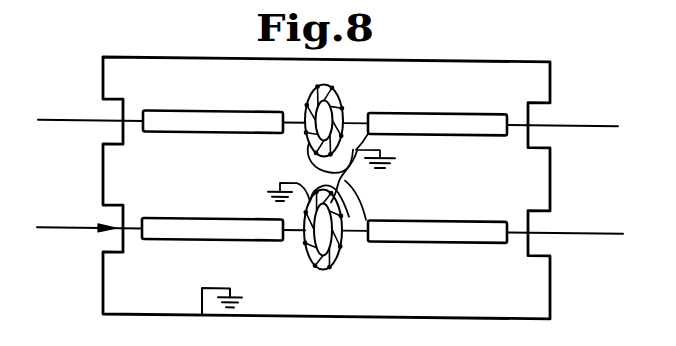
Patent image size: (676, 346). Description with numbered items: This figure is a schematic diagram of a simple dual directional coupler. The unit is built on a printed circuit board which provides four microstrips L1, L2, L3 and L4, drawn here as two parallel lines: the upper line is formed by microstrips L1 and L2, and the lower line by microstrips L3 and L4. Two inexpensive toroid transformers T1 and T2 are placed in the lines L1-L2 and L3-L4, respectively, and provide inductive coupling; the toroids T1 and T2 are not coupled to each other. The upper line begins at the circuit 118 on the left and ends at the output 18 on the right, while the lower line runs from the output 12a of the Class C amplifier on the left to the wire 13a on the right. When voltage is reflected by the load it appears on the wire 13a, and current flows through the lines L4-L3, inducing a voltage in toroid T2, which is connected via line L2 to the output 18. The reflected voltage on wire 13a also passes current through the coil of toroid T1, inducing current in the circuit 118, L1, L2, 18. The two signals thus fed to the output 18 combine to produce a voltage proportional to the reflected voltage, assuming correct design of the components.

The circuit 118 is at (68, 119).
The output 18 is at (591, 119).
The output of Class C amplifier 12a is at (65, 227).
The wire 13a is at (587, 226).
The microstrip L1 is at (224, 106).
The microstrip L2 is at (437, 108).
The microstrip L3 is at (223, 212).
The microstrip L4 is at (437, 215).
The toroid transformer T1 is at (350, 134).
The toroid transformer T2 is at (317, 243).